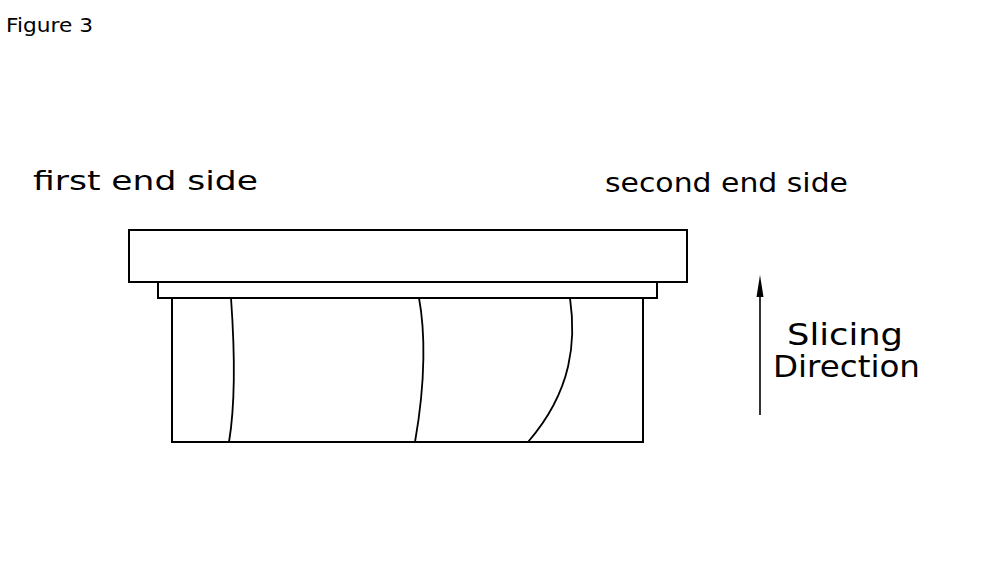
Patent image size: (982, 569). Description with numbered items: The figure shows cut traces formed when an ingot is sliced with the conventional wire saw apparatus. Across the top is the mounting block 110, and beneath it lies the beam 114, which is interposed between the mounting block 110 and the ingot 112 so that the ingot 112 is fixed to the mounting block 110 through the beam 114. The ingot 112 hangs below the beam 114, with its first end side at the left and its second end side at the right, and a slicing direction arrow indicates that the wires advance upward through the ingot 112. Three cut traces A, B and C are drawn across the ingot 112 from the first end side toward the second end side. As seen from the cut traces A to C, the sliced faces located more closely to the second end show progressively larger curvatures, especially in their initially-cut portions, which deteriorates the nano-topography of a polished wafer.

The mounting block 110 is at (317, 241).
The ingot 112 is at (182, 372).
The beam 114 is at (461, 292).
The cut trace A is at (232, 409).
The cut trace B is at (417, 412).
The cut trace C is at (543, 426).